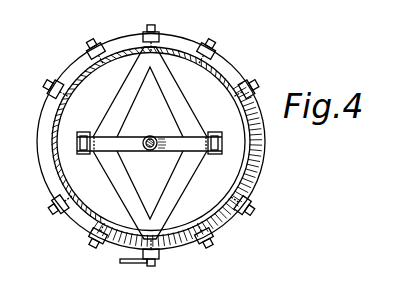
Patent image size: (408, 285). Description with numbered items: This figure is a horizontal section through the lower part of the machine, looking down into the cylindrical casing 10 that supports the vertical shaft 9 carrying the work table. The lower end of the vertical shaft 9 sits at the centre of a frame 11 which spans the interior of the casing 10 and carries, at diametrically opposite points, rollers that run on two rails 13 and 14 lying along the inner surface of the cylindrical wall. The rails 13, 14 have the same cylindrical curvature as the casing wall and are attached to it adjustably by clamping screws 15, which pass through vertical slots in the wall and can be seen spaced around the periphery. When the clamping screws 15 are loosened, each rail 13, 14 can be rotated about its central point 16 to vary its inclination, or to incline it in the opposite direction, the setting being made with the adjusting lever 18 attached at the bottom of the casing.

The vertical shaft 9 is at (153, 137).
The cylindrical casing 10 is at (256, 167).
The frame 11 is at (115, 115).
The rail 13 is at (90, 201).
The rail 14 is at (89, 76).
The clamping screws 15 is at (94, 49).
The central points 16 is at (161, 263).
The adjusting lever 18 is at (121, 263).